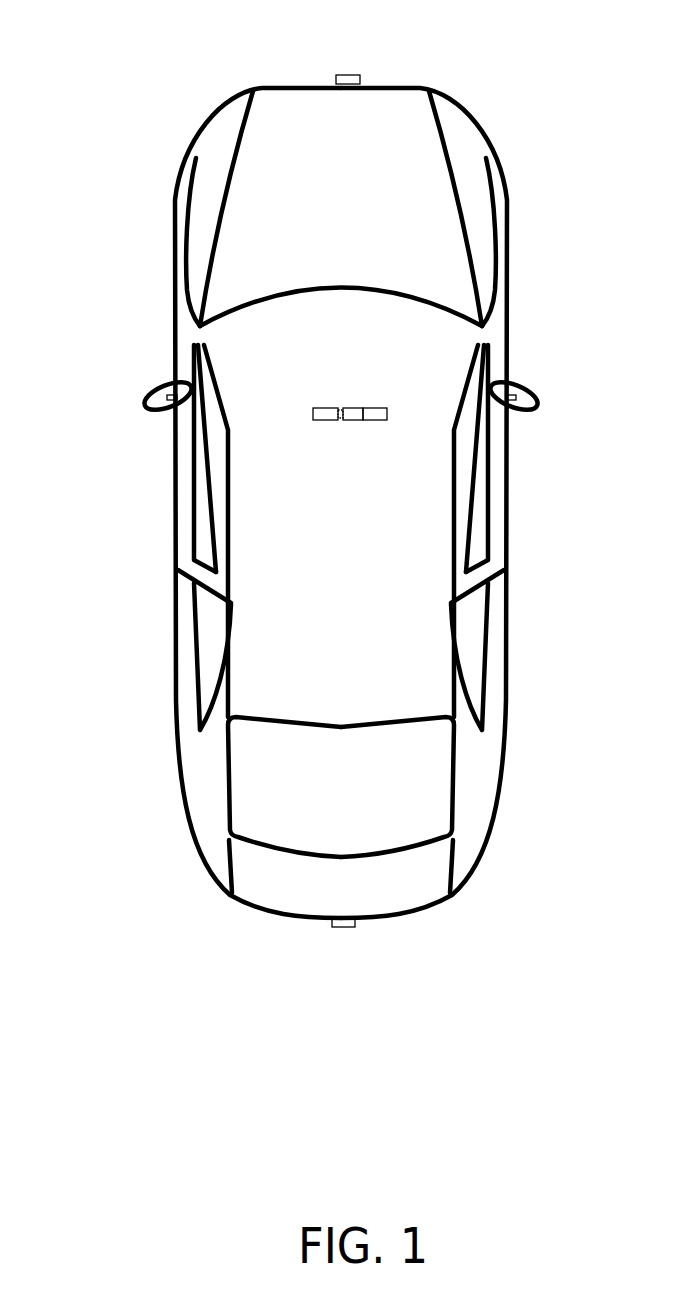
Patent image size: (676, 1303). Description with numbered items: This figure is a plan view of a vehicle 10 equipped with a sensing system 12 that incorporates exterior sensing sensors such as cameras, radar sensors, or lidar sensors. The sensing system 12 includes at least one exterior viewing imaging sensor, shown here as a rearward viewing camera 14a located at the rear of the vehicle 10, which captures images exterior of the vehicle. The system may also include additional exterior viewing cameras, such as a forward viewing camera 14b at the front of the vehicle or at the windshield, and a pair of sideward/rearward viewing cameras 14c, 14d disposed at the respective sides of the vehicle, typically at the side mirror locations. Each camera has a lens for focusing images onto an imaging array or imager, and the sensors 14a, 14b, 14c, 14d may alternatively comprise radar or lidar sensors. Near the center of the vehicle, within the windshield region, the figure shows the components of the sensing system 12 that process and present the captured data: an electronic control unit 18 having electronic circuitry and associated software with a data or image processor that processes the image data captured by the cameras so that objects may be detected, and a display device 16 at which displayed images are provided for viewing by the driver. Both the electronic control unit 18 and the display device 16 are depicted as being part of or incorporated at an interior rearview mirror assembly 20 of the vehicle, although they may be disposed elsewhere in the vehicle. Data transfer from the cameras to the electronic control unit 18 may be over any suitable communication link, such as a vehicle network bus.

The vehicle 10 is at (110, 100).
The sensing system 12 is at (305, 933).
The rearward viewing imaging sensor or camera 14a is at (350, 926).
The forward viewing camera 14b is at (353, 75).
The sideward/rearward viewing camera 14c is at (157, 392).
The sideward/rearward viewing camera 14d is at (528, 390).
The display device 16 is at (330, 410).
The electronic control unit (ECU) 18 is at (343, 408).
The interior rearview mirror assembly 20 is at (385, 408).